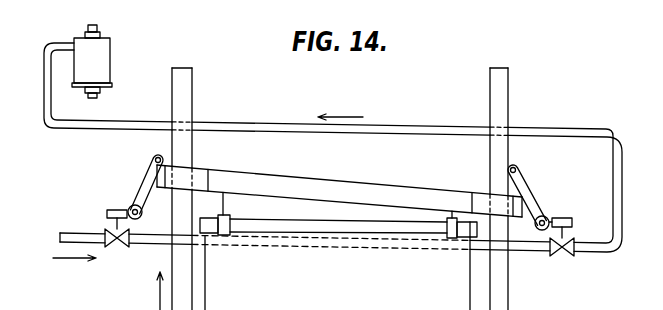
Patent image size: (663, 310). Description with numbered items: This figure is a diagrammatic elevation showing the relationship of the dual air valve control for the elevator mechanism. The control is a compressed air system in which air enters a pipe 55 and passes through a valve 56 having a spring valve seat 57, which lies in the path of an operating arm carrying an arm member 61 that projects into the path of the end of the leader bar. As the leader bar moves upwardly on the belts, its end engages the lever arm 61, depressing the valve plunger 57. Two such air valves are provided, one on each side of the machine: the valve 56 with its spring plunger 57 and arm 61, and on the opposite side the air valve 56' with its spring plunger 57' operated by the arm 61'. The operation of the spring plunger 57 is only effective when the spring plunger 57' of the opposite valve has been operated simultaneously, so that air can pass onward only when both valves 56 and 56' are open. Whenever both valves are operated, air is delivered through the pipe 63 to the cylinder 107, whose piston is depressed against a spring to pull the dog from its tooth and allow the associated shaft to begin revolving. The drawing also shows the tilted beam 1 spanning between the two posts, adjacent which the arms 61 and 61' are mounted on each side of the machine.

The beam 1 is at (346, 225).
The pipe 55 is at (72, 233).
The valve 56 is at (116, 258).
The spring valve seat 57 is at (99, 210).
The arm member 61 is at (129, 187).
The pipe 63 is at (390, 127).
The cylinder 107 is at (99, 58).
The arm 61' is at (550, 197).
The spring plunger 57' is at (579, 218).
The air valve 56' is at (574, 263).